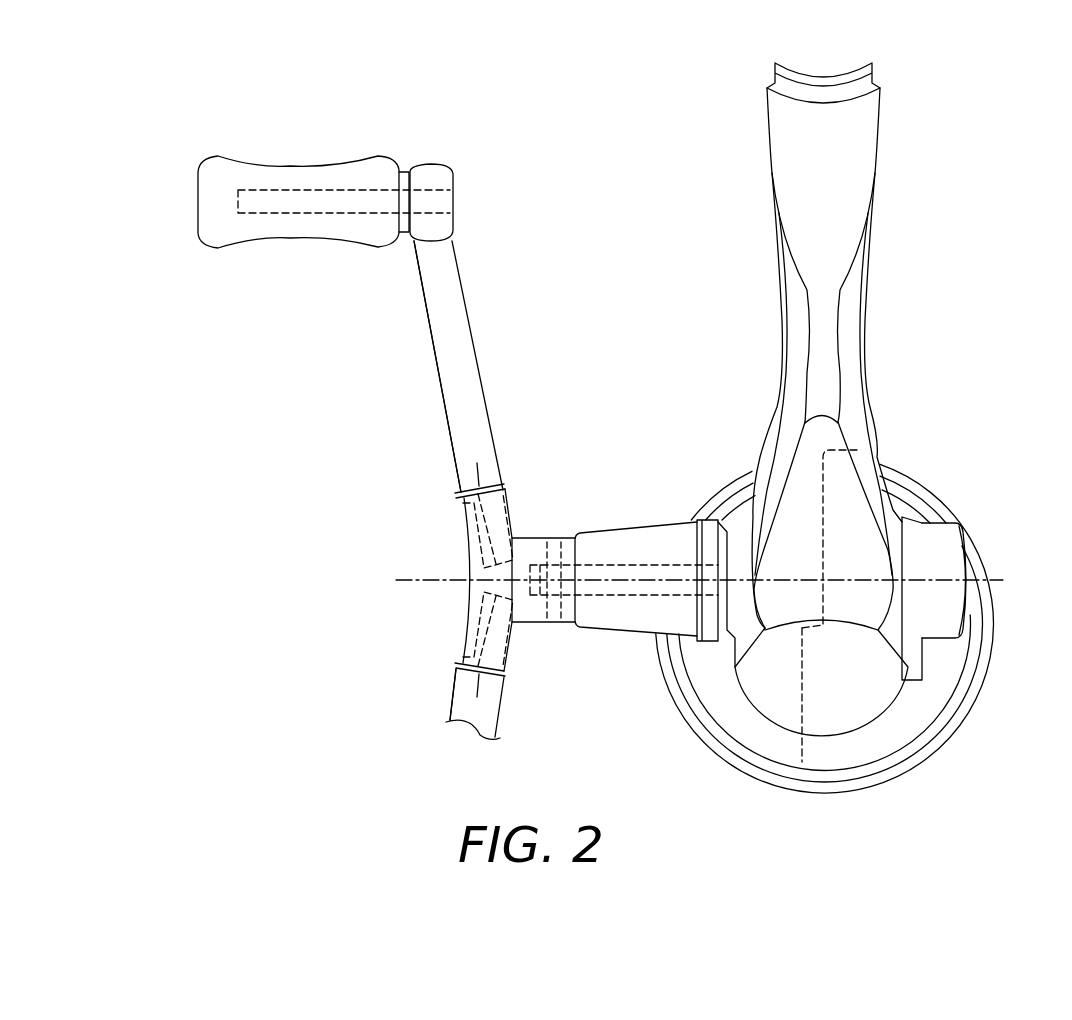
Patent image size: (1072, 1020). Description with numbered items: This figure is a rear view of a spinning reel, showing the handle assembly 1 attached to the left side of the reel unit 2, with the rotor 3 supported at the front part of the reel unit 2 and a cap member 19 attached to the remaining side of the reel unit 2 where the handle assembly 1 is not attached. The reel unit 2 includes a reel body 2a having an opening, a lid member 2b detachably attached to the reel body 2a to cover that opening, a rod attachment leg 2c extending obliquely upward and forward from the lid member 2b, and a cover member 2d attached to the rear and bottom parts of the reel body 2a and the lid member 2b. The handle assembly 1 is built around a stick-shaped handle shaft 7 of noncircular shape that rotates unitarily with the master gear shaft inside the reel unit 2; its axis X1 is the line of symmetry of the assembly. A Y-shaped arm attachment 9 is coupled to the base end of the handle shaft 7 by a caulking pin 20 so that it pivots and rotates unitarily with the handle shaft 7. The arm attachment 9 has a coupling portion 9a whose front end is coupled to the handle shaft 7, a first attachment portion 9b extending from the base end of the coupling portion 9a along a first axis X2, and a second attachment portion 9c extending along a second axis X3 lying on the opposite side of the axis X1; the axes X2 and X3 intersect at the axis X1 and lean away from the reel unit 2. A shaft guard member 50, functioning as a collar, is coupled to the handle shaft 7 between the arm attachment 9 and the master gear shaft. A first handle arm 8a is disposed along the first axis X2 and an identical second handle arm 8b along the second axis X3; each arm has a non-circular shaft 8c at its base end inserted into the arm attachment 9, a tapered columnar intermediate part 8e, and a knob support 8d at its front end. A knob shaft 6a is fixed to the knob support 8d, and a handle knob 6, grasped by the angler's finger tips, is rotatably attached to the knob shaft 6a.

The handle assembly 1 is at (353, 332).
The reel unit 2 is at (950, 340).
The reel body 2a is at (873, 467).
The lid member 2b is at (785, 440).
The rod attachment leg 2c is at (827, 253).
The cover member 2d is at (780, 673).
The rotor 3 is at (972, 721).
The handle knob 6 is at (261, 158).
The knob shaft 6a is at (292, 188).
The handle shaft 7 is at (625, 597).
The first handle arm 8a is at (417, 436).
The second handle arm 8b is at (438, 691).
The non-circular shaft 8c is at (455, 520).
The knob support 8d is at (453, 178).
The intermediate part 8e is at (442, 374).
The arm attachment 9 is at (449, 557).
The coupling portion 9a is at (537, 622).
The first attachment portion 9b is at (455, 508).
The second attachment portion 9c is at (459, 614).
The cap member 19 is at (953, 560).
The caulking pin 20 is at (575, 623).
The shaft guard member 50 is at (648, 547).
The axis of the handle shaft X1 is at (421, 580).
The first axis X2 is at (480, 483).
The second axis X3 is at (456, 668).